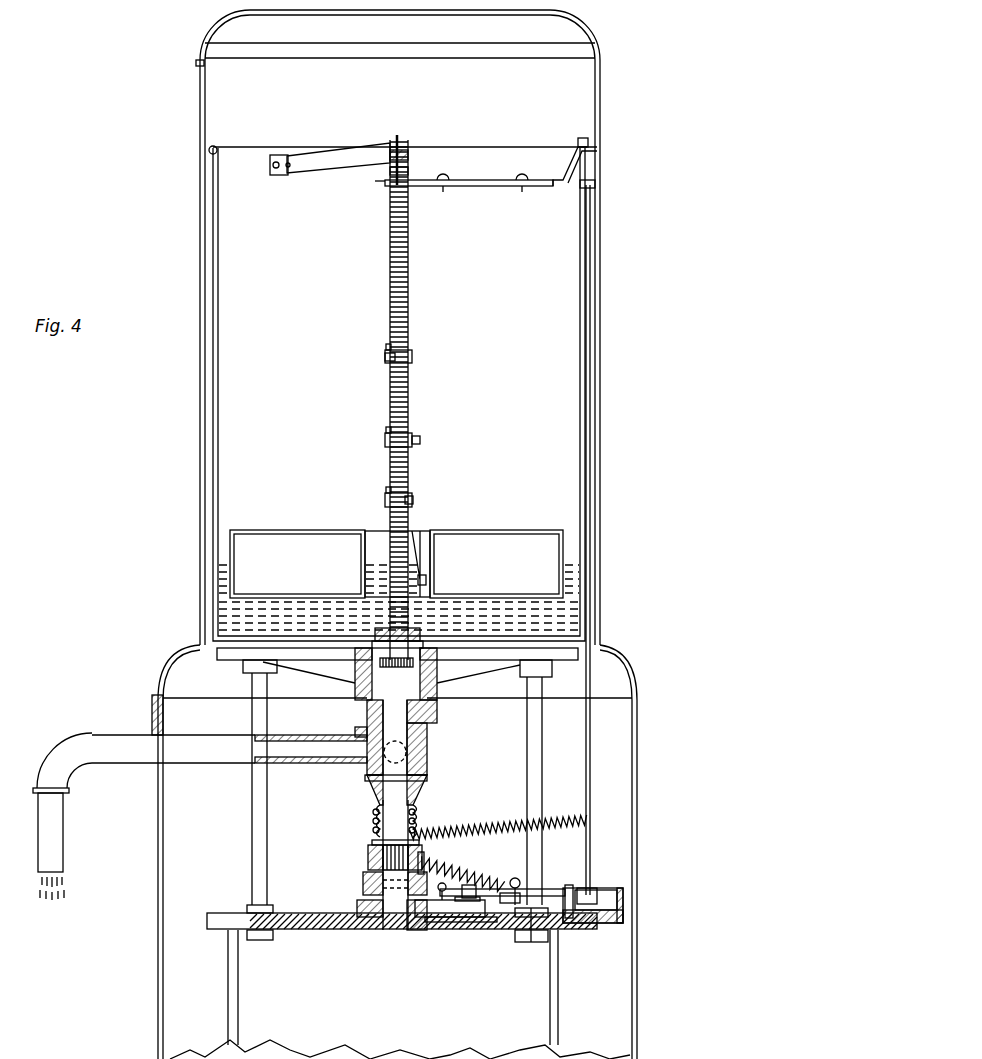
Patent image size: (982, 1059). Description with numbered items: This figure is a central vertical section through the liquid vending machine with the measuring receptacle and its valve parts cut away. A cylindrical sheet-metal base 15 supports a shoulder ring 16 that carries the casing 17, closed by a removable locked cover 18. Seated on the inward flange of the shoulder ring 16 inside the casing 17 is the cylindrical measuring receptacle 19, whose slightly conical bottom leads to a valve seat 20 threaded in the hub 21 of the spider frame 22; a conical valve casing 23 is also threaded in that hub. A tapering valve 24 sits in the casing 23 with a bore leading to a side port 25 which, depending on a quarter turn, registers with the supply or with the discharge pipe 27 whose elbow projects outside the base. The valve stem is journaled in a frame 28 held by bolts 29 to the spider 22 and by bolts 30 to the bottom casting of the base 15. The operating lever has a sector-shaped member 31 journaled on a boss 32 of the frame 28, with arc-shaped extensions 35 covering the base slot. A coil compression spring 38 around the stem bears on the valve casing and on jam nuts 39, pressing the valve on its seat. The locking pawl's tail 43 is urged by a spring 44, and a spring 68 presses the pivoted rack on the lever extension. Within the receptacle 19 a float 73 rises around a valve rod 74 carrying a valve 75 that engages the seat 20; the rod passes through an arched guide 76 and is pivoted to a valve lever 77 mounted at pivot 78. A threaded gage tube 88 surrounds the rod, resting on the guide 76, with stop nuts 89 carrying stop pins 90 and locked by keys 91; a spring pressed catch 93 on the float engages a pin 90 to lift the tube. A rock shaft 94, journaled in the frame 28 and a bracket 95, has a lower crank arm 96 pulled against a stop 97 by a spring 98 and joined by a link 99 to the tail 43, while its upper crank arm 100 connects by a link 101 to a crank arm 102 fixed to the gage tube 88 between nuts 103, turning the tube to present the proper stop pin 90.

The base 15 is at (158, 971).
The shoulder ring 16 is at (172, 652).
The casing 17 is at (600, 440).
The cover 18 is at (590, 28).
The measuring tank or receptacle 19 is at (213, 408).
The valve seat 20 is at (360, 652).
The hub 21 is at (437, 662).
The spider frame 22 is at (397, 679).
The conical valve casing 23 is at (427, 723).
The tapering valve 24 is at (420, 776).
The vertical slot or port 25 is at (385, 752).
The discharge pipe 27 is at (64, 832).
The frame 28 is at (336, 930).
The bolts 29 is at (252, 832).
The bolts 30 is at (238, 994).
The sector-shaped member 31 is at (470, 917).
The boss 32 is at (394, 932).
The arc-shaped extensions 35 is at (623, 906).
The coil compression spring 38 is at (376, 812).
The jam nuts 39 is at (370, 858).
The tail 43 is at (479, 896).
The spring 44 is at (471, 872).
The spring 68 is at (447, 866).
The float 73 is at (475, 530).
The valve rod 74 is at (400, 137).
The valve 75 is at (398, 670).
The arched guide 76 is at (420, 632).
The valve lever 77 is at (338, 163).
The pivot 78 is at (279, 178).
The gage tube 88 is at (408, 312).
The stop nuts 89 is at (412, 357).
The stop pins 90 is at (385, 357).
The keys 91 is at (388, 346).
The spring pressed catch 93 is at (413, 530).
The rock shaft 94 is at (591, 240).
The bracket 95 is at (595, 185).
The crank arm 96 is at (576, 890).
The stop 97 is at (578, 926).
The spring 98 is at (489, 825).
The link 99 is at (549, 888).
The crank arm 100 is at (553, 188).
The link 101 is at (510, 187).
The crank arm 102 is at (441, 187).
The nuts 103 is at (383, 184).